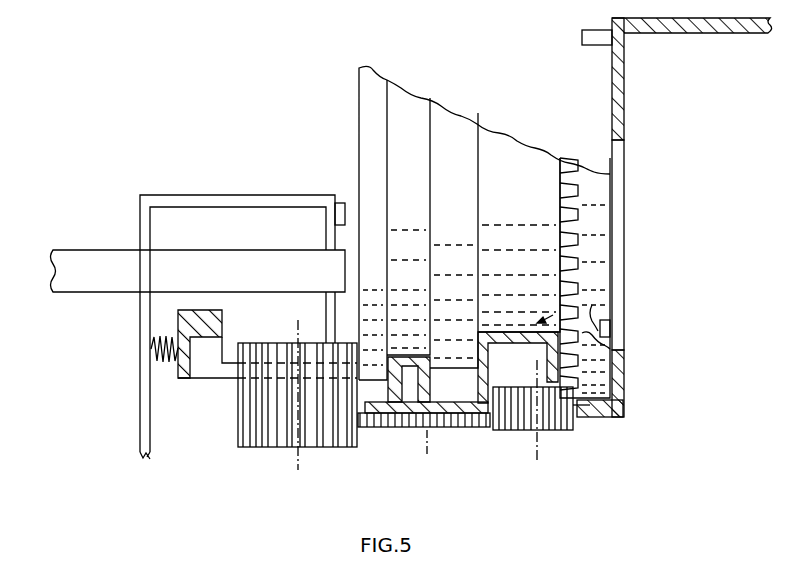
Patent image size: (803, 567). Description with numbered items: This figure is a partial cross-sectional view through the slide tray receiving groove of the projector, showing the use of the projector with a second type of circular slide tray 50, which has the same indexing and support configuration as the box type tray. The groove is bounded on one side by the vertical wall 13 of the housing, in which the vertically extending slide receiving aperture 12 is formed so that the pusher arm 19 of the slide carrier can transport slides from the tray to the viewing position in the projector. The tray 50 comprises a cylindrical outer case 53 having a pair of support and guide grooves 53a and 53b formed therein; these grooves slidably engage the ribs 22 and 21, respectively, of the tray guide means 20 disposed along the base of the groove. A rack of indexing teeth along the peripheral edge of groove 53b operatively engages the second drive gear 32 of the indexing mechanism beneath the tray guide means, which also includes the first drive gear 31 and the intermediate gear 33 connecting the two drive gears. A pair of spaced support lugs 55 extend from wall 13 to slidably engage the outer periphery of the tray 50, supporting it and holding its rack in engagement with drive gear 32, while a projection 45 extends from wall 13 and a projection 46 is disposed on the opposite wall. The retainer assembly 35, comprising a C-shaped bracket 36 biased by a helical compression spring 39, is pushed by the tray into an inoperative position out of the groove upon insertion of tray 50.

The slide receiving aperture 12 is at (620, 269).
The vertical wall 13 is at (612, 82).
The pusher arm 19 is at (108, 262).
The tray guide means 20 is at (620, 342).
The rib 21 is at (498, 332).
The rib 22 is at (415, 353).
The first drive gear 31 is at (328, 447).
The second drive gear 32 is at (532, 432).
The intermediate gear 33 is at (420, 428).
The retainer assembly 35 is at (217, 393).
The C-shaped bracket 36 is at (222, 323).
The helical compression spring 39 is at (163, 364).
The projection 45 is at (582, 40).
The projection 46 is at (342, 200).
The circular slide tray 50 is at (598, 218).
The cylindrical outer case 53 is at (365, 88).
The support and guide groove 53a is at (412, 98).
The support and guide groove 53b is at (510, 135).
The support lug 55 is at (605, 323).